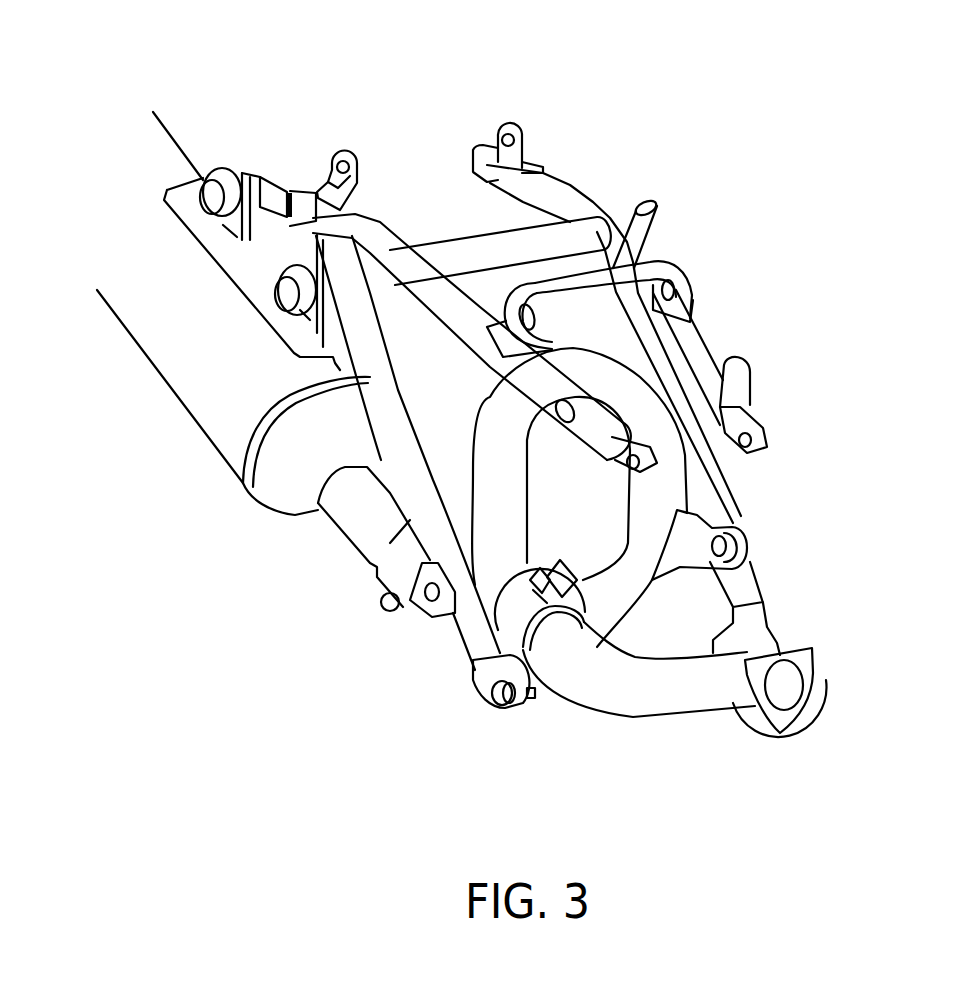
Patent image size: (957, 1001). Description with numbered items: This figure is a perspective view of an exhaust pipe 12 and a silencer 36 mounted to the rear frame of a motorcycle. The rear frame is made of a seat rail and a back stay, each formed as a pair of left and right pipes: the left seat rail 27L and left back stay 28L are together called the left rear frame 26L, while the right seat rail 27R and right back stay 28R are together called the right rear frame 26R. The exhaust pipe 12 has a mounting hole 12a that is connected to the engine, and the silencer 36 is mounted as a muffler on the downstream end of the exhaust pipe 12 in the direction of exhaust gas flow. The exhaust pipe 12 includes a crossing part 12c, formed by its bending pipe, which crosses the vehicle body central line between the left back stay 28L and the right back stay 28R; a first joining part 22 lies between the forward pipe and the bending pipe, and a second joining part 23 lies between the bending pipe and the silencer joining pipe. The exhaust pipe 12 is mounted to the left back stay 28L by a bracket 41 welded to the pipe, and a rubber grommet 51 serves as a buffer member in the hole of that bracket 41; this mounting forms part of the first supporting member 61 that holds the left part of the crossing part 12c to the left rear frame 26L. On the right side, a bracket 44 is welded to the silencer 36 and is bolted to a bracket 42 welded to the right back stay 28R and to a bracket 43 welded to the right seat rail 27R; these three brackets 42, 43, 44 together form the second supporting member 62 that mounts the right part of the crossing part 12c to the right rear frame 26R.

The exhaust pipe 12 is at (717, 699).
The mounting hole 12a is at (812, 652).
The crossing part 12c is at (660, 613).
The first joining part 22 is at (506, 617).
The second joining part 23 is at (373, 576).
The right rear frame 26R is at (485, 364).
The left rear frame 26L is at (676, 330).
The right seat rail 27R is at (388, 233).
The left seat rail 27L is at (640, 325).
The right back stay 28R is at (383, 327).
The left back stay 28L is at (697, 333).
The silencer 36 is at (205, 420).
The bracket 41 is at (748, 564).
The bracket 42 is at (308, 268).
The bracket 43 is at (258, 270).
The bracket 44 is at (258, 253).
The grommet 51 is at (724, 545).
The first supporting member 61 is at (735, 521).
The second supporting member 62 is at (280, 185).